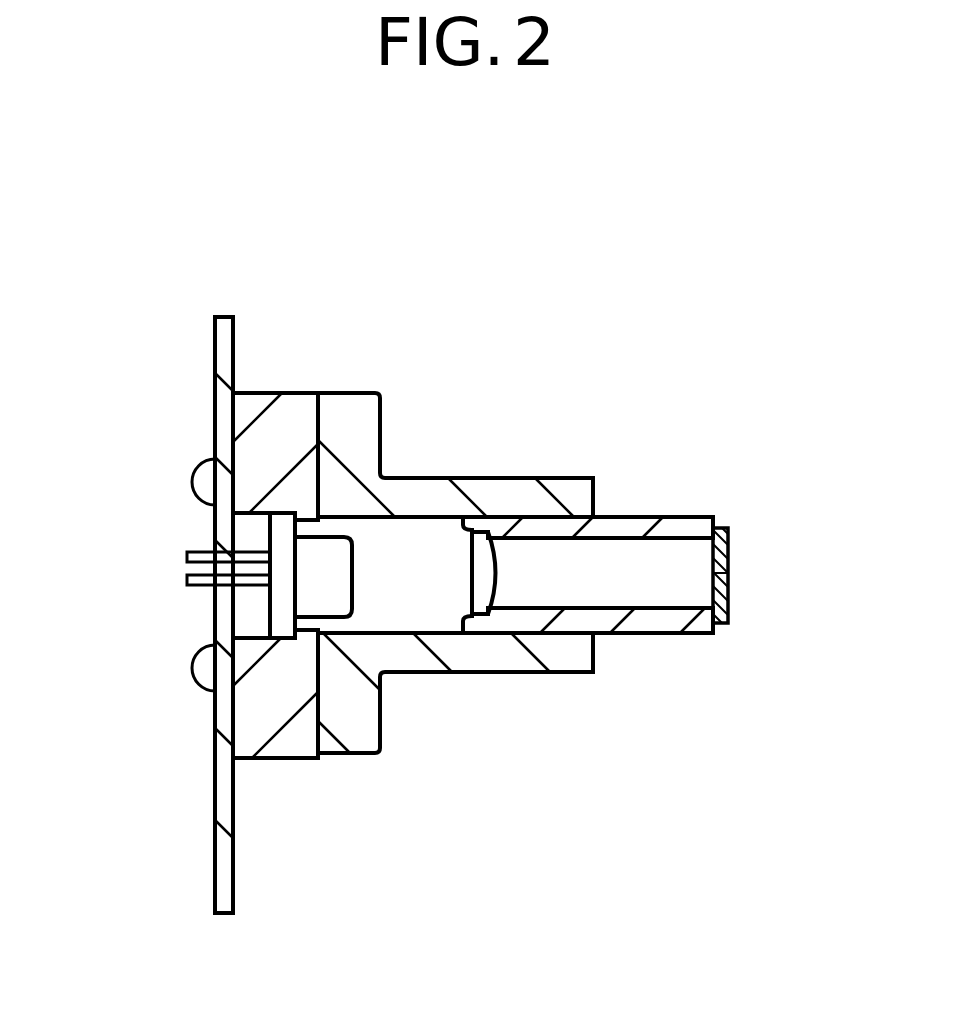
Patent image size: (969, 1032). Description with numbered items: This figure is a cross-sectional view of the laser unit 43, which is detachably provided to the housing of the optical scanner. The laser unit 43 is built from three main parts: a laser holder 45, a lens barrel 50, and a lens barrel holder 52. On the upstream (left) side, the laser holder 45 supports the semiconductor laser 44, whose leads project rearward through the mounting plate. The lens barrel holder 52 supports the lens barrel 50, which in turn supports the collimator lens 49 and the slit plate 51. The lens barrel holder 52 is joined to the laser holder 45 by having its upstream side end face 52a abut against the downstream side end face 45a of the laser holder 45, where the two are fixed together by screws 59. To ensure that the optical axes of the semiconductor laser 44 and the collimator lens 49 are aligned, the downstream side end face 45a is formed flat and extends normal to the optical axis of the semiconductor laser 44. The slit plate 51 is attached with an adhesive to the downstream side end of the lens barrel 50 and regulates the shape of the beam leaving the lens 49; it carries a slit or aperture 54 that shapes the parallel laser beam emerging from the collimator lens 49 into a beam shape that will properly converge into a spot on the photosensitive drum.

The laser unit 43 is at (723, 679).
The semiconductor laser 44 is at (280, 535).
The laser holder 45 is at (262, 730).
The downstream side end face 45a is at (320, 421).
The collimator lens 49 is at (495, 573).
The lens barrel 50 is at (670, 527).
The slit plate 51 is at (730, 542).
The lens barrel holder 52 is at (498, 655).
The upstream side end face 52a is at (317, 733).
The aperture 54 is at (730, 571).
The screws 59 is at (187, 467).